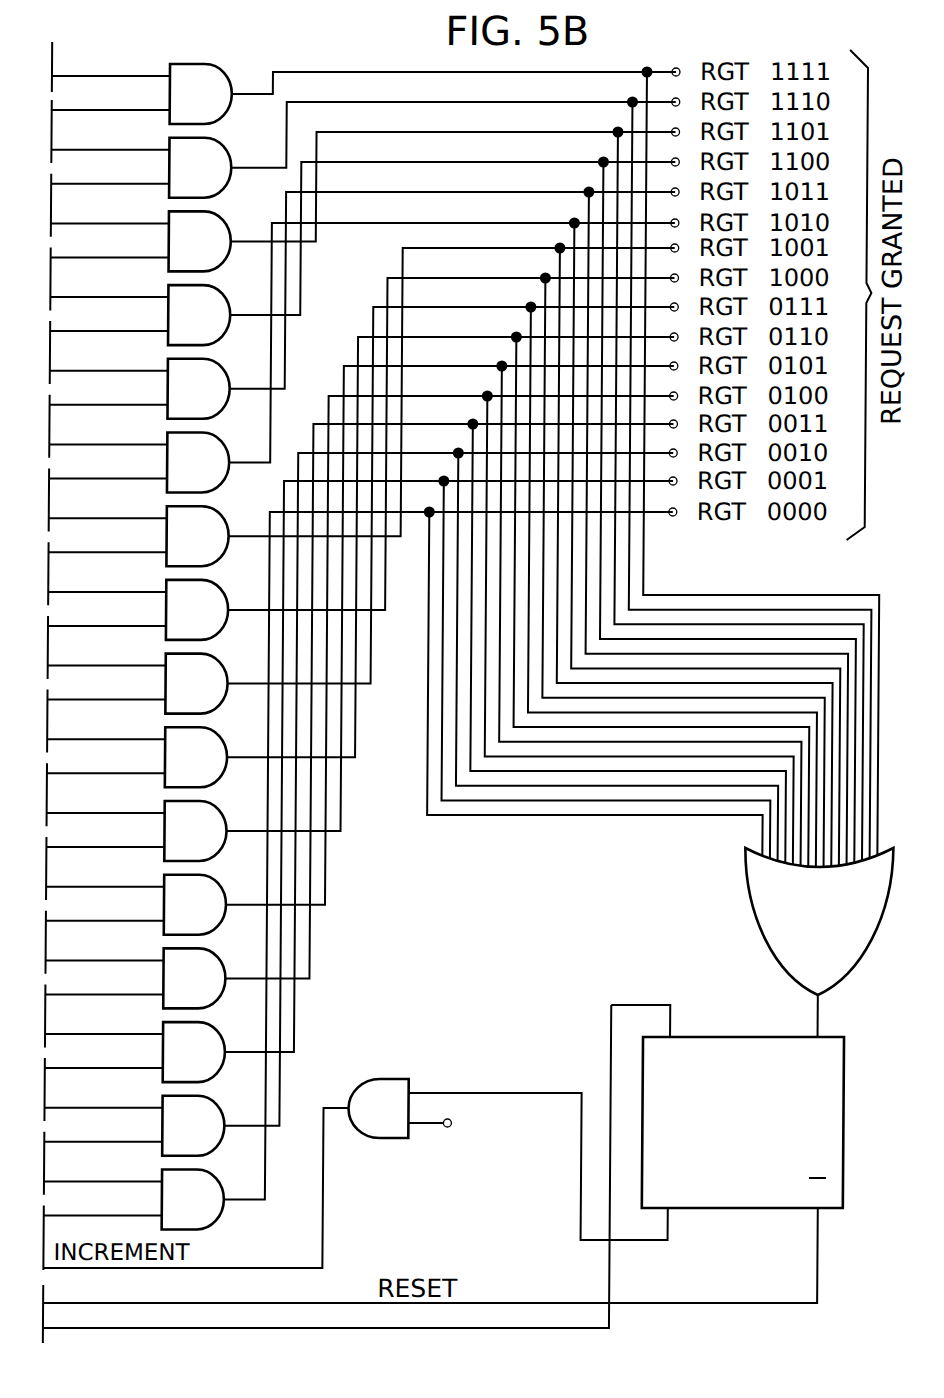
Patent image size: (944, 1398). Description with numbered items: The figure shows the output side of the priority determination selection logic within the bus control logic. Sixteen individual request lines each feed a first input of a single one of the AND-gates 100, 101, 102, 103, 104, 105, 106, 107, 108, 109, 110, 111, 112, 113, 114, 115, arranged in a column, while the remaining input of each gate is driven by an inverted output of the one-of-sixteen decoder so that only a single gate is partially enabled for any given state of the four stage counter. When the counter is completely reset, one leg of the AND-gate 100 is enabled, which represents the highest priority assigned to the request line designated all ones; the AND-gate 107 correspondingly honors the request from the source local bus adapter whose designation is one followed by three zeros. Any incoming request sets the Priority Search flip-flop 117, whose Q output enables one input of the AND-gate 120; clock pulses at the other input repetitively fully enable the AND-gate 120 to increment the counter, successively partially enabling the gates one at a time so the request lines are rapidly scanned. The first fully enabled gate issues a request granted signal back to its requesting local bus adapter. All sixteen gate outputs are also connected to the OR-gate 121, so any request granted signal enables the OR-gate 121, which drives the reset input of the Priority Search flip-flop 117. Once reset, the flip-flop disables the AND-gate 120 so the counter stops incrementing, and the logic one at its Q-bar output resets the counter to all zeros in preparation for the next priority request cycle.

The AND-gate 100 is at (212, 70).
The AND-gate 101 is at (181, 187).
The AND-gate 102 is at (181, 260).
The AND-gate 103 is at (181, 334).
The AND-gate 104 is at (181, 408).
The AND-gate 105 is at (181, 482).
The AND-gate 106 is at (181, 555).
The AND-gate 107 is at (181, 629).
The AND-gate 108 is at (181, 703).
The AND-gate 109 is at (181, 776).
The AND-gate 110 is at (181, 850).
The AND-gate 111 is at (181, 924).
The AND-gate 112 is at (181, 997).
The AND-gate 113 is at (181, 1071).
The AND-gate 114 is at (181, 1145).
The AND-gate 115 is at (214, 1207).
The Priority Search flip-flop 117 is at (727, 1036).
The AND-gate 120 is at (394, 1092).
The OR-gate 121 is at (761, 893).